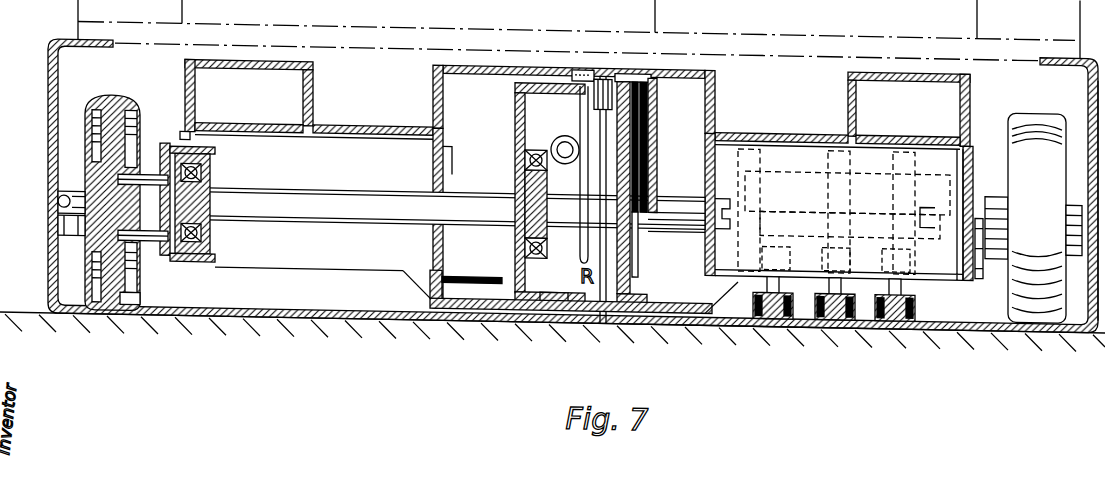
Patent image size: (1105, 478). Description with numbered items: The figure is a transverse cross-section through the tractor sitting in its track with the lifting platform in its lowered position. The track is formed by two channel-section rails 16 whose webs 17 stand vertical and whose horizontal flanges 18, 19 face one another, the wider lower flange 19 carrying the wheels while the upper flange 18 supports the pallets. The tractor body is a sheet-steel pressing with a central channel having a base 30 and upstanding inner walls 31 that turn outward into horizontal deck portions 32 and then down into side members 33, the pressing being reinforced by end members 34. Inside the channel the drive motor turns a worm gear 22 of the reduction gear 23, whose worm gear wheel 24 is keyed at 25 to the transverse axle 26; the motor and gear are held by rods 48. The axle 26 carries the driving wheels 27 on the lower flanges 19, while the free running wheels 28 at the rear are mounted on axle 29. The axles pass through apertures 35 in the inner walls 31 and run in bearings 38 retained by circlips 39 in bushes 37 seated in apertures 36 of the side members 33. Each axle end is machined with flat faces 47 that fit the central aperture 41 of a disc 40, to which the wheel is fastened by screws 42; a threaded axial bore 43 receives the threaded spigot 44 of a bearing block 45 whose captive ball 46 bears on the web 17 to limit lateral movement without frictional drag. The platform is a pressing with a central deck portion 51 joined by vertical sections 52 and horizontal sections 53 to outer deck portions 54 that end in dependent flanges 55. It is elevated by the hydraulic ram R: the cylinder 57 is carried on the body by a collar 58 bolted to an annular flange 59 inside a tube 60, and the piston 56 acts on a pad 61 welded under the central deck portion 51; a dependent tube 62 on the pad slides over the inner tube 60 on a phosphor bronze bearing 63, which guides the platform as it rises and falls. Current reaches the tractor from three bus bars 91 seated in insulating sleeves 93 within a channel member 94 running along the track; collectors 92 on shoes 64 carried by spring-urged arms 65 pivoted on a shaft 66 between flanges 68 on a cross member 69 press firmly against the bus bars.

The rails 16 is at (1088, 60).
The webs 17 is at (1094, 80).
The upper flange 18 is at (1053, 38).
The lower flange 19 is at (1040, 314).
The worm gear 22 is at (558, 124).
The reduction gear 23 is at (512, 91).
The worm gear wheel 24 is at (560, 292).
The key 25 is at (543, 292).
The axle 26 is at (475, 198).
The driving wheels 27 is at (115, 98).
The free running wheels 28 is at (1033, 96).
The axle 29 is at (693, 205).
The base 30 is at (487, 300).
The inner walls 31 is at (433, 155).
The deck portions 32 is at (241, 117).
The side members 33 is at (189, 147).
The end members 34 is at (309, 208).
The apertures 35 is at (447, 148).
The apertures 36 is at (212, 258).
The bushes 37 is at (210, 243).
The bearings 38 is at (207, 174).
The circlips 39 is at (210, 163).
The disc 40 is at (157, 157).
The central aperture 41 is at (143, 230).
The screws 42 is at (138, 266).
The threaded axial bore 43 is at (92, 274).
The threaded spigot 44 is at (96, 135).
The bearing block 45 is at (62, 193).
The captive ball 46 is at (73, 227).
The flat faces 47 is at (137, 125).
The rods 48 is at (452, 266).
The central deck portion 51 is at (630, 62).
The vertical sections 52 is at (312, 78).
The horizontal sections 53 is at (357, 117).
The outer deck portions 54 is at (293, 55).
The dependent flanges 55 is at (193, 96).
The piston 56 is at (578, 59).
The cylinder 57 is at (606, 312).
The collar 58 is at (643, 88).
The annular flange 59 is at (648, 130).
The tube 60 is at (627, 247).
The pad 61 is at (607, 62).
The dependent tube 62 is at (650, 165).
The phosphor bronze bearing 63 is at (657, 84).
The shoe 64 is at (922, 238).
The arm 65 is at (893, 183).
The shaft 66 is at (863, 197).
The flanges 68 is at (753, 158).
The cross member 69 is at (900, 131).
The bus bars 91 is at (748, 319).
The collectors 92 is at (755, 291).
The insulating sleeves 93 is at (810, 305).
The channel member 94 is at (855, 312).